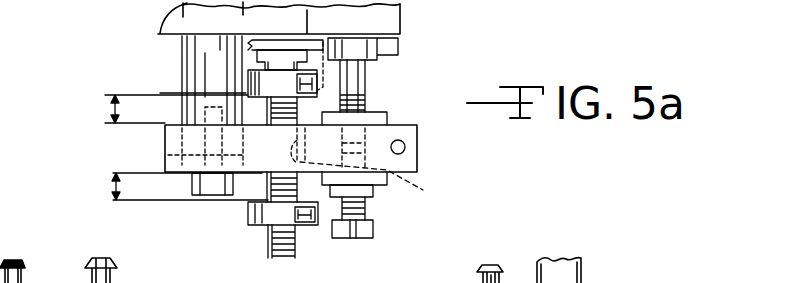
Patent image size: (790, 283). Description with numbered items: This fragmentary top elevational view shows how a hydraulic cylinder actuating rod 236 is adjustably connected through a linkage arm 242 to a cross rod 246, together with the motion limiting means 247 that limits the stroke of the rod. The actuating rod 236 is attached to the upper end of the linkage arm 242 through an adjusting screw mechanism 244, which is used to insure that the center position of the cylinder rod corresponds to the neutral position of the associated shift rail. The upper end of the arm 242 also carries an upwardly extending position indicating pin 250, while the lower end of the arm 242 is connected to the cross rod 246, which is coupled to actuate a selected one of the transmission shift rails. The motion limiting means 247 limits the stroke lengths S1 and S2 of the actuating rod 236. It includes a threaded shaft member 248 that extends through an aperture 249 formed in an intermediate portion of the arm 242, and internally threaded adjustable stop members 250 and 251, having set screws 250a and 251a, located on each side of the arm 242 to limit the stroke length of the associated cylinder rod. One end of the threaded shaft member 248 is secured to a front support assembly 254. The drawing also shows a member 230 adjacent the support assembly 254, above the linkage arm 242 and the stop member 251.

The upper die plate 230 is at (399, 22).
The front support assembly 254 is at (181, 25).
The cross rod 246 is at (220, 33).
The set screw 251a is at (323, 38).
The adjustable stop member 251 is at (249, 83).
The actuating rod 236 is at (367, 83).
The linkage arm 242 is at (165, 150).
The adjustable stop member 250 is at (405, 147).
The aperture 249 is at (392, 183).
The threaded shaft member 248 is at (267, 188).
The motion limiting means 247 is at (311, 236).
The set screw 250a is at (318, 212).
The adjusting screw mechanism 244 is at (380, 228).
The stroke length S2 is at (110, 107).
The stroke length S1 is at (113, 187).